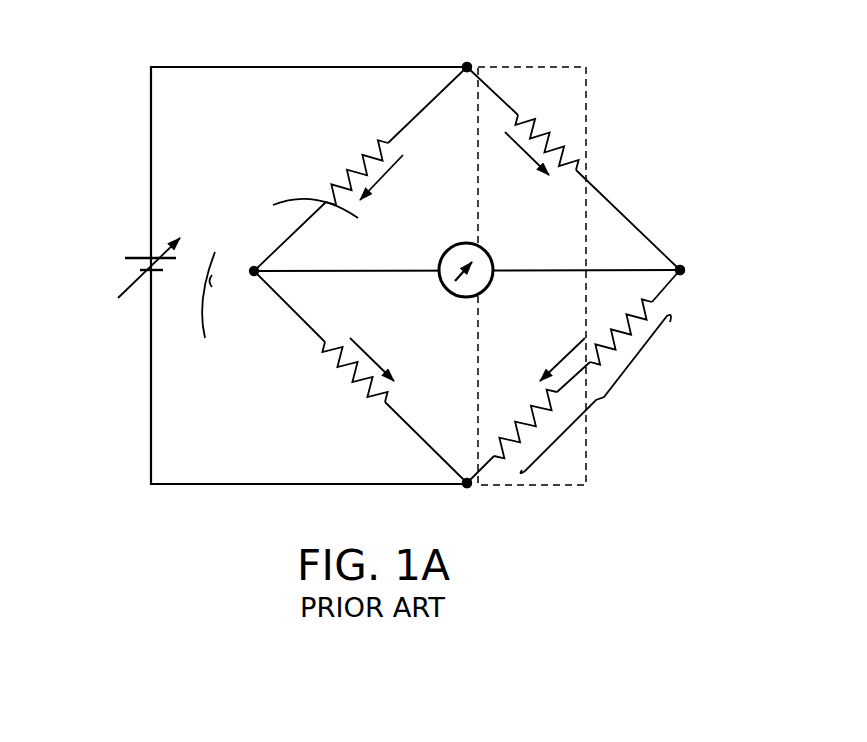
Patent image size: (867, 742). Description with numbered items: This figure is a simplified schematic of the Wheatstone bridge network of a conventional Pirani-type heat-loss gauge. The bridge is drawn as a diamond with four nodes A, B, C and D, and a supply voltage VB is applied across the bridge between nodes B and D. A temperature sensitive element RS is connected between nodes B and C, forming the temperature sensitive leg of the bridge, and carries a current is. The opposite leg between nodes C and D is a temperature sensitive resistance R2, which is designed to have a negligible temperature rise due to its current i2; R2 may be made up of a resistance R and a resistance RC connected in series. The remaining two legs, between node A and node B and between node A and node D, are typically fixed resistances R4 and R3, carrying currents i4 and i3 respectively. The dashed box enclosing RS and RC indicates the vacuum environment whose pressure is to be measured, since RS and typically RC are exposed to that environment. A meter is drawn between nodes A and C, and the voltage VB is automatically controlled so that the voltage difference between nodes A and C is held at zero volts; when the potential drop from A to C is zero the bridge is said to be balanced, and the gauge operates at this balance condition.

The node A is at (220, 295).
The node B is at (466, 51).
The node C is at (695, 274).
The node D is at (467, 505).
The voltage VB is at (132, 268).
The fixed resistance R4 is at (330, 179).
The fixed resistance R3 is at (349, 376).
The temperature sensitive element RS is at (546, 137).
The resistance RC is at (524, 419).
The resistance R is at (621, 327).
The temperature sensitive resistance R2 is at (596, 394).
The current i4 is at (381, 183).
The current i3 is at (372, 354).
The current is is at (526, 156).
The current i2 is at (560, 354).